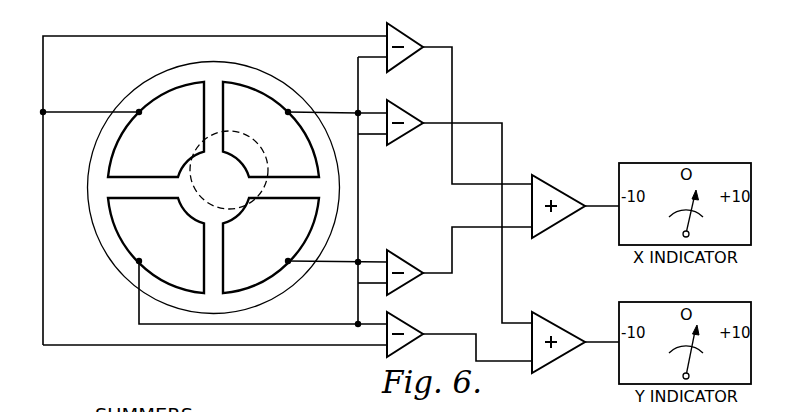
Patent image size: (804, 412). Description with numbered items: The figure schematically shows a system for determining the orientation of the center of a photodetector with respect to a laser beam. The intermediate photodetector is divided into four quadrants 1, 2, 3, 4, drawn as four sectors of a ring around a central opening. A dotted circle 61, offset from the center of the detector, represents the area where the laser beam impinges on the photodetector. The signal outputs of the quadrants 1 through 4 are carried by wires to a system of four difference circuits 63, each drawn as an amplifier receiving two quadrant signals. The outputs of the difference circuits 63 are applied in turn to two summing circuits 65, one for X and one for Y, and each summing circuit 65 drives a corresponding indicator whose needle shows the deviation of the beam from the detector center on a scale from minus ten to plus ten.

The quadrant 1 is at (271, 129).
The quadrant 2 is at (156, 129).
The quadrant 3 is at (156, 245).
The quadrant 4 is at (271, 245).
The dotted circle 61 is at (232, 132).
The difference circuits 63 is at (412, 35).
The summing circuits 65 is at (540, 176).